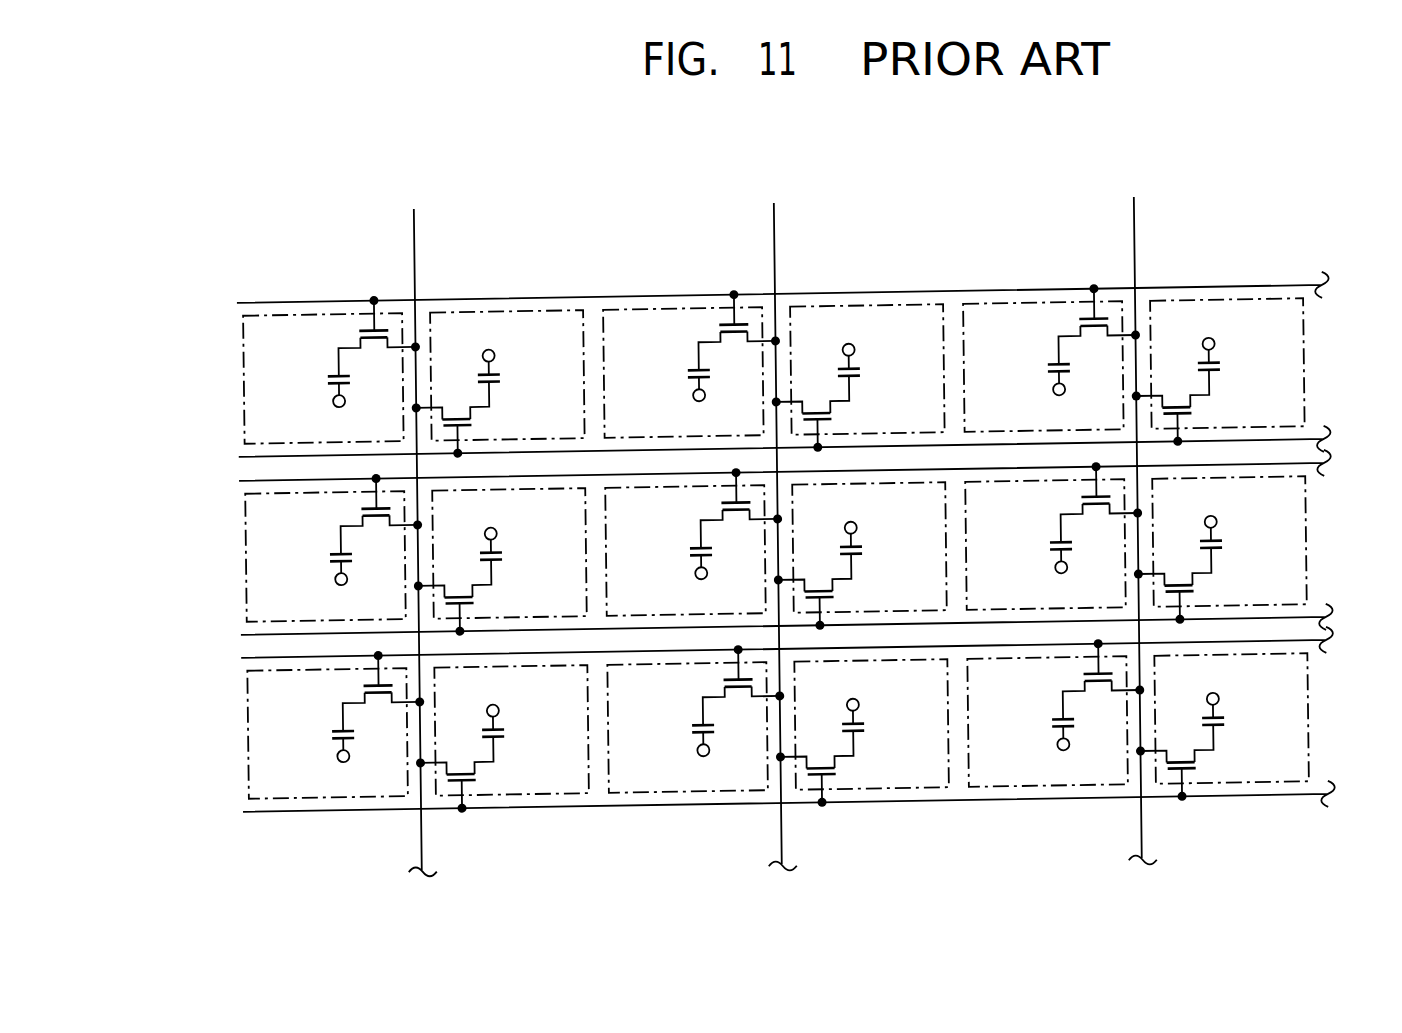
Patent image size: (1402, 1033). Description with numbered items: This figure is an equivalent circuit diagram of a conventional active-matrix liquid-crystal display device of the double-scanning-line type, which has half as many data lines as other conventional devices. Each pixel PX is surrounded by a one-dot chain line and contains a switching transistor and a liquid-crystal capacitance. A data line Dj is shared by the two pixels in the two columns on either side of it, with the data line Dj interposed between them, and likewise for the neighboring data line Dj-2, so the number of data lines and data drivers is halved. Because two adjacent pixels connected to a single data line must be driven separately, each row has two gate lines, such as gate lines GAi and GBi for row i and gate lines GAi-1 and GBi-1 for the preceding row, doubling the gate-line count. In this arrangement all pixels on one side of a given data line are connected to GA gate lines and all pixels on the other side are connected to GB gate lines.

The pixel PX is at (303, 307).
The gate line GAi-1 is at (740, 294).
The gate line GBi-1 is at (742, 446).
The gate line GAi is at (742, 472).
The gate line GBi is at (744, 624).
The data line Dj-2 is at (418, 523).
The data line Dj is at (778, 518).